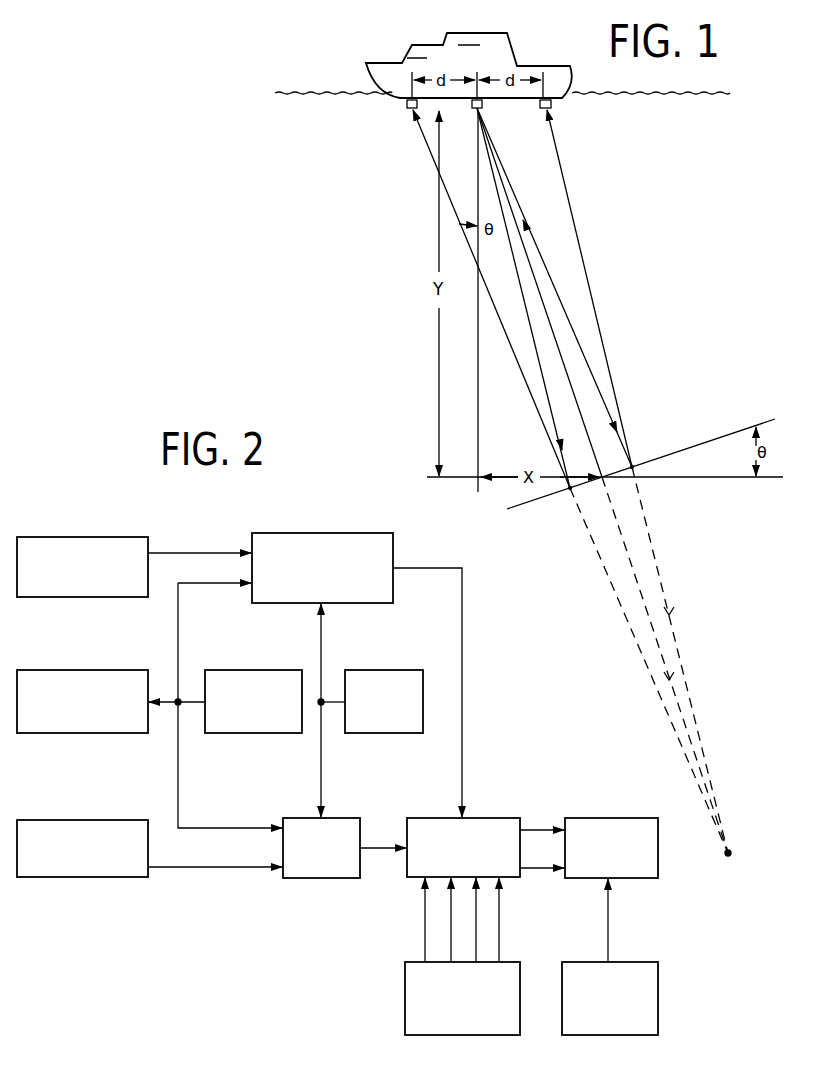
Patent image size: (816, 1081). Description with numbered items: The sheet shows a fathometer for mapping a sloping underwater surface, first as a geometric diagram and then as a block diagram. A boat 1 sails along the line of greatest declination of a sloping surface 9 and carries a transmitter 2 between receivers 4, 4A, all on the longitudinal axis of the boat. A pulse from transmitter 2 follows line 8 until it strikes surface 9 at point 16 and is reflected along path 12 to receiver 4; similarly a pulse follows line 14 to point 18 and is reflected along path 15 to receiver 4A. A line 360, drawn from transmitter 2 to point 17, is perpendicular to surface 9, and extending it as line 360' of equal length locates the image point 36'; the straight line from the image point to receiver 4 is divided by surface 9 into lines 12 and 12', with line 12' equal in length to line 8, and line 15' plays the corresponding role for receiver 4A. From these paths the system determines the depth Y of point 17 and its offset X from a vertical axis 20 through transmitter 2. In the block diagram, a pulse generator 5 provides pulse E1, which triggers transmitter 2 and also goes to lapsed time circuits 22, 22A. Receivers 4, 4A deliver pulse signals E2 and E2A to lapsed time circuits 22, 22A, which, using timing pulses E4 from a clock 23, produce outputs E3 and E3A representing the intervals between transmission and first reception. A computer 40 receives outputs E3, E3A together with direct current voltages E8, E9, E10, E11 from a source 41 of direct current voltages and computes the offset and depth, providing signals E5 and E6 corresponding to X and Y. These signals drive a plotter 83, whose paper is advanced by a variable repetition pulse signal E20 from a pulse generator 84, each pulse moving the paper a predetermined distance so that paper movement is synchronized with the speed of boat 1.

In FIG. 1, the boat 1 is at (514, 50).
In FIG. 1, the transmitter 2 is at (483, 107).
In FIG. 2, the transmitter 2 is at (64, 670).
In FIG. 1, the receiver 4 is at (407, 104).
In FIG. 2, the receiver 4 is at (68, 537).
In FIG. 1, the receiver 4A is at (552, 106).
In FIG. 2, the receiver 4A is at (82, 848).
In FIG. 2, the pulse generator 5 is at (237, 670).
In FIG. 1, the line 8 is at (513, 252).
In FIG. 1, the sloping surface 9 is at (675, 452).
In FIG. 1, the path 12 is at (475, 299).
In FIG. 1, the line 14 is at (538, 252).
In FIG. 1, the path 15 is at (589, 288).
In FIG. 1, the point 16 is at (569, 490).
In FIG. 1, the point 17 is at (604, 480).
In FIG. 1, the point 18 is at (634, 466).
In FIG. 1, the vertical axis 20 is at (480, 418).
In FIG. 2, the lapsed time circuit 22 is at (296, 533).
In FIG. 2, the lapsed time circuit 22A is at (321, 848).
In FIG. 2, the clock 23 is at (378, 733).
In FIG. 2, the computer 40 is at (480, 818).
In FIG. 2, the source of direct current voltages 41 is at (447, 1035).
In FIG. 2, the plotter 83 is at (608, 818).
In FIG. 2, the pulse generator 84 is at (612, 1035).
In FIG. 1, the line 360 is at (564, 287).
In FIG. 1, the line 12' is at (649, 670).
In FIG. 1, the line 15' is at (680, 660).
In FIG. 1, the line 360' is at (672, 665).
In FIG. 1, the image point 36' is at (742, 864).
In FIG. 2, the pulse E1 is at (190, 703).
In FIG. 2, the pulse signal E2 is at (180, 553).
In FIG. 2, the pulse signal E2A is at (178, 868).
In FIG. 2, the output E3 is at (462, 617).
In FIG. 2, the output E3A is at (382, 843).
In FIG. 2, the timing pulses E4 is at (333, 702).
In FIG. 2, the signal E5 is at (545, 830).
In FIG. 2, the signal E6 is at (537, 870).
In FIG. 2, the direct current voltage E8 is at (426, 893).
In FIG. 2, the direct current voltage E9 is at (451, 922).
In FIG. 2, the direct current voltage E10 is at (476, 940).
In FIG. 2, the direct current voltage E11 is at (499, 912).
In FIG. 2, the pulse signal E20 is at (610, 922).